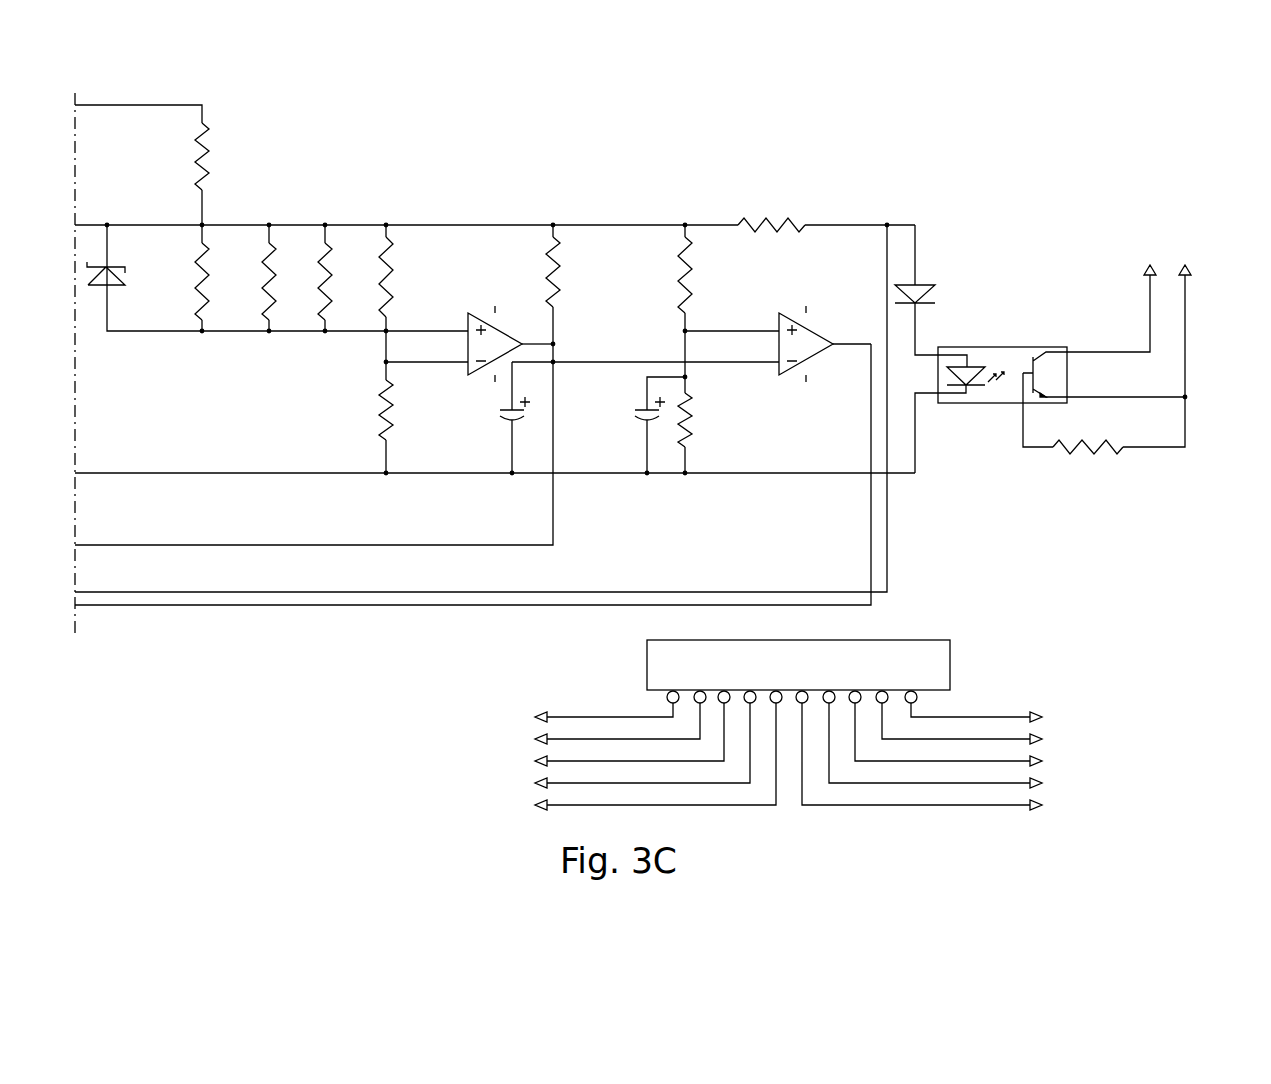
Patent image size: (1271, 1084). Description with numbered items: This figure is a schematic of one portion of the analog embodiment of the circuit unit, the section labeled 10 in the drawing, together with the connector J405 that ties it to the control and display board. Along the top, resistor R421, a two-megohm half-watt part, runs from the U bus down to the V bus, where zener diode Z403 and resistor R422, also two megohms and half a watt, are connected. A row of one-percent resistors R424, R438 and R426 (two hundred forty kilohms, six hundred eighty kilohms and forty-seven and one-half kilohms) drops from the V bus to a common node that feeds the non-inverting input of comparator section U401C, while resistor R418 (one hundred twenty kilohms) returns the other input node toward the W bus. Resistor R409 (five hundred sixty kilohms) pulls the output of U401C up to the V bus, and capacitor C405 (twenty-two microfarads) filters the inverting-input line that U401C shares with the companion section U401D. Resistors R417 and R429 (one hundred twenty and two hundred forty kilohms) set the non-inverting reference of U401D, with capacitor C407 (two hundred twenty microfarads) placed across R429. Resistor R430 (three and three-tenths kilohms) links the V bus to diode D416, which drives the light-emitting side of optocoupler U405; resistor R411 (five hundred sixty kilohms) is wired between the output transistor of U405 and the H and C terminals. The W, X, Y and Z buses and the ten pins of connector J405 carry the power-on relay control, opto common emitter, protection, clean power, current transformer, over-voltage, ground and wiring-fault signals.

The power supply / protection circuit 10 is at (618, 165).
The resistor R421 is at (170, 156).
The zener diode Z403 is at (136, 275).
The resistor R422 is at (201, 301).
The resistor R424 is at (271, 257).
The resistor R438 is at (324, 301).
The resistor R426 is at (383, 255).
The resistor R418 is at (355, 410).
The resistor R409 is at (522, 272).
The resistor R417 is at (654, 275).
The resistor R429 is at (713, 420).
The resistor R430 is at (771, 210).
The comparator section U401C is at (470, 345).
The comparator section U401D is at (780, 346).
The capacitor C405 is at (488, 417).
The capacitor C407 is at (630, 425).
The diode D416 is at (944, 290).
The optocoupler U405 is at (1027, 394).
The resistor R411 is at (1088, 465).
The connector J405 is at (653, 718).